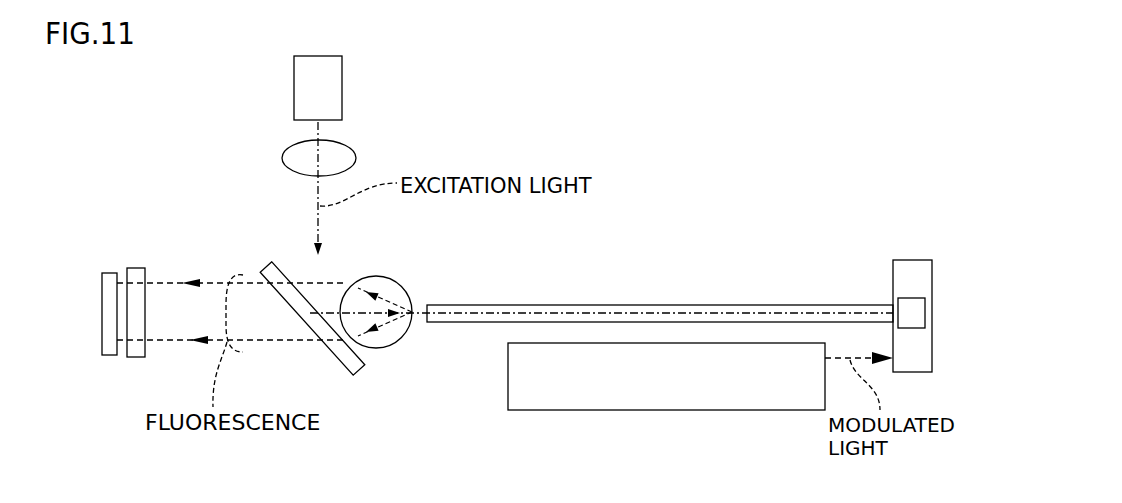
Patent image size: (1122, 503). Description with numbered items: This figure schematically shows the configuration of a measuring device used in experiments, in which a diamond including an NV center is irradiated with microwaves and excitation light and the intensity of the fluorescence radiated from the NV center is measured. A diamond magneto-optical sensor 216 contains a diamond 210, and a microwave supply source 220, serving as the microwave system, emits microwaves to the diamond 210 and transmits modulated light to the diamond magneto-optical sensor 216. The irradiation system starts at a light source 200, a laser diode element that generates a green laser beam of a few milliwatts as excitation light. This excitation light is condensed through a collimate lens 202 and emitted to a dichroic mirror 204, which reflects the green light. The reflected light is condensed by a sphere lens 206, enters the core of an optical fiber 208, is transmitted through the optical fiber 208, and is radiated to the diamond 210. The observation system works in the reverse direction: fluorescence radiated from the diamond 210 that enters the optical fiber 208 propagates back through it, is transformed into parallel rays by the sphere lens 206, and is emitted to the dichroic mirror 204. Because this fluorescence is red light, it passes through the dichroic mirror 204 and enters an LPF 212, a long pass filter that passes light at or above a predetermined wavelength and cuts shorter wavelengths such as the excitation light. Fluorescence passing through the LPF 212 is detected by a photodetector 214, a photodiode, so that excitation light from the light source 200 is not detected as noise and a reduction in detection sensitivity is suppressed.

The light source 200 is at (342, 90).
The collimate lens 202 is at (357, 157).
The dichroic mirror 204 is at (282, 257).
The sphere lens 206 is at (377, 275).
The optical fiber 208 is at (660, 305).
The diamond 210 is at (913, 298).
The LPF (Long Pass Filter) 212 is at (135, 357).
The photodetector 214 is at (110, 273).
The diamond magneto-optical sensor 216 is at (912, 260).
The microwave supply source 220 is at (673, 412).